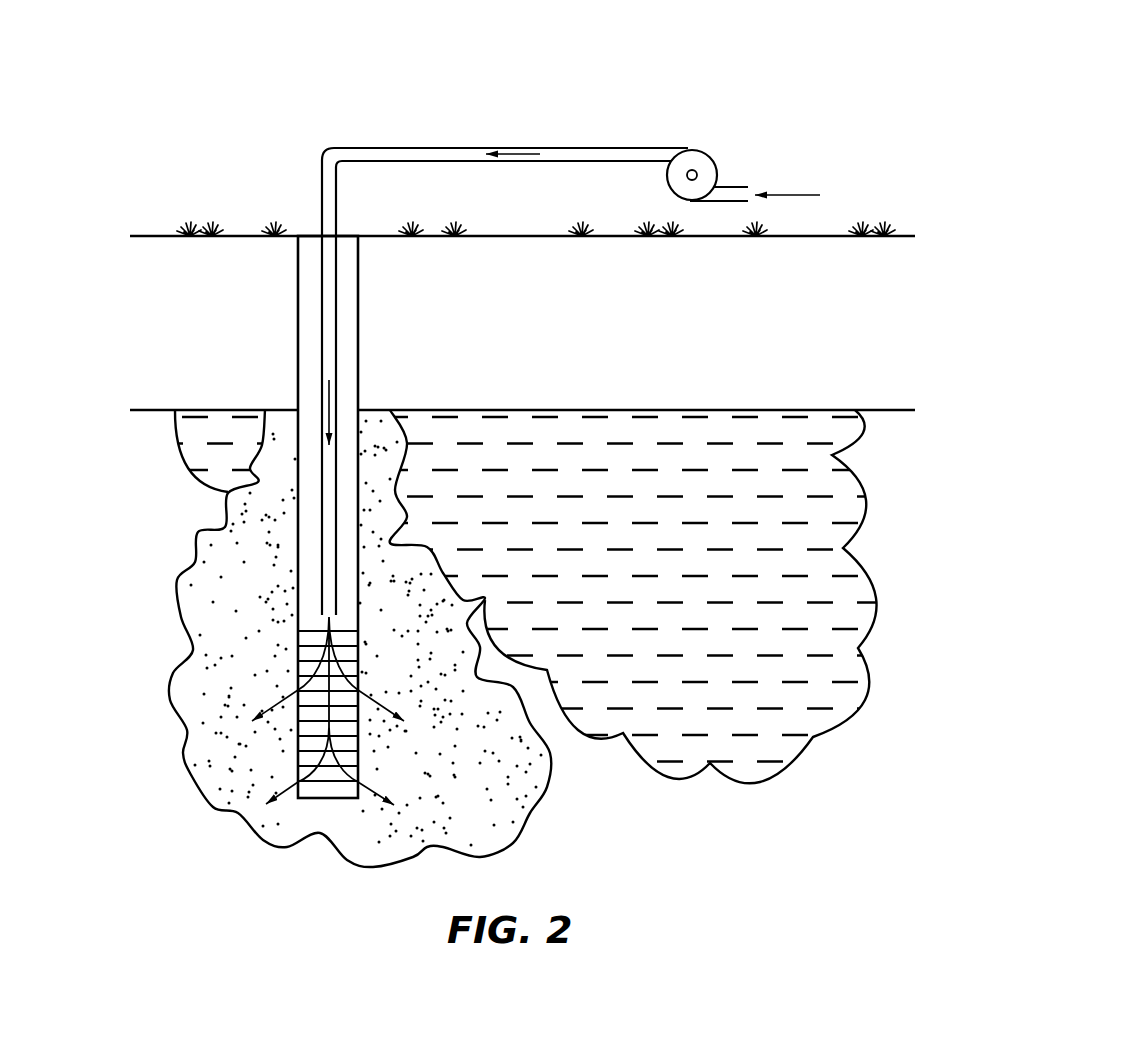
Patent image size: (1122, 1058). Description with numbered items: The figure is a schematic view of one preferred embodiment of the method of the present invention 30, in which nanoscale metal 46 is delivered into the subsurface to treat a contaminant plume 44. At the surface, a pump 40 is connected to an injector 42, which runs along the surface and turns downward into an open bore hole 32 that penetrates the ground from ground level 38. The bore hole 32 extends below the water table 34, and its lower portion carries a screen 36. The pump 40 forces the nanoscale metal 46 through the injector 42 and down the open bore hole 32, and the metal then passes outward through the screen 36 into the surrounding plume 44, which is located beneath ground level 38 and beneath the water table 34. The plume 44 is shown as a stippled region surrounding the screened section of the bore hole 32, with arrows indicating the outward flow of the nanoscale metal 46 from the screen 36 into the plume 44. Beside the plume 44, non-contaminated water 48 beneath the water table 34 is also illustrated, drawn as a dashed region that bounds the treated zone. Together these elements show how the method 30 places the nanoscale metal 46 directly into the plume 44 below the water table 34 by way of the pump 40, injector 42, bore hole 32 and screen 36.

The method of the present invention 30 is at (1028, 141).
The open bore hole 32 is at (353, 348).
The water table 34 is at (139, 404).
The screen 36 is at (302, 728).
The ground level 38 is at (139, 230).
The pump 40 is at (707, 167).
The injector 42 is at (607, 148).
The plume 44 is at (190, 598).
The nanoscale metal 46 is at (390, 802).
The non-contaminated water 48 is at (750, 766).